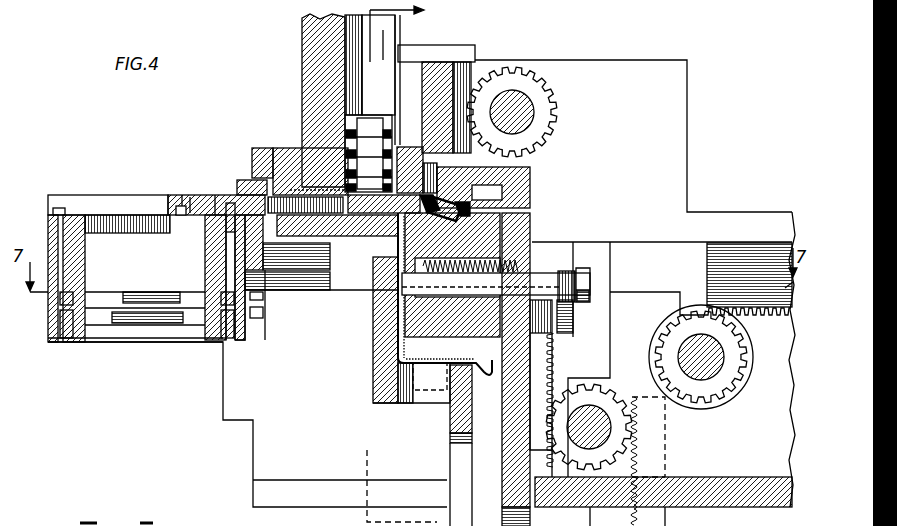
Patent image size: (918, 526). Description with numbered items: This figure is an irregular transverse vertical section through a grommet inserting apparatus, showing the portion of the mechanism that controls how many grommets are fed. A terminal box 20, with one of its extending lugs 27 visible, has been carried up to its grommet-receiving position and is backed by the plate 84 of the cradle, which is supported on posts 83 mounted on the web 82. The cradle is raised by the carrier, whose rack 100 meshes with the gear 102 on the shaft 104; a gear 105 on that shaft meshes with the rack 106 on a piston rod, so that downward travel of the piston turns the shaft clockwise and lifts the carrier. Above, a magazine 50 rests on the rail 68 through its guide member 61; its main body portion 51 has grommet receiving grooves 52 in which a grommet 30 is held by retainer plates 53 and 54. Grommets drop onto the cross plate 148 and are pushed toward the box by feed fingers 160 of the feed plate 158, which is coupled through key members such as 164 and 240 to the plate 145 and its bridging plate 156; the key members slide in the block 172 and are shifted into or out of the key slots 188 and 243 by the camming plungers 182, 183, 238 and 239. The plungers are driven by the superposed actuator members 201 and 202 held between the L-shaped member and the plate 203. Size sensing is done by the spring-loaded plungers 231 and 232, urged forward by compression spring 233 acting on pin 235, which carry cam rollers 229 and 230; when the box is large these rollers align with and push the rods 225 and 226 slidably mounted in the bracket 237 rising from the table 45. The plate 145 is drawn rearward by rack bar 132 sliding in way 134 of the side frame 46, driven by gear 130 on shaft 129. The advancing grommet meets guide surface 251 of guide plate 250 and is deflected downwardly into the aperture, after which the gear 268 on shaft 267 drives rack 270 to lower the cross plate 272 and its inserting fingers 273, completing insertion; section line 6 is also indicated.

The section line 6 is at (406, 33).
The terminal box 20 is at (368, 294).
The extending lug 27 is at (437, 390).
The grommet 30 is at (370, 115).
The table 45 is at (735, 498).
The side frame 46 is at (687, 141).
The magazine 50 is at (288, 26).
The main body portion 51 is at (302, 44).
The grommet receiving groove 52 is at (383, 30).
The retainer plate 53 is at (302, 58).
The retainer plate 54 is at (400, 40).
The guide member 61 is at (285, 148).
The rail 68 is at (257, 148).
The web 82 is at (452, 420).
The post 83 is at (405, 403).
The plate 84 is at (373, 383).
The rack 100 is at (595, 411).
The gear 102 is at (617, 393).
The shaft 104 is at (625, 413).
The gear 105 is at (633, 433).
The rack 106 is at (647, 445).
The shaft 129 is at (720, 367).
The gear 130 is at (714, 367).
The rack bar 132 is at (731, 260).
The way 134 is at (297, 291).
The plate 145 is at (206, 233).
The cross plate 148 is at (330, 252).
The bridging plate 156 is at (247, 181).
The feed plate 158 is at (183, 197).
The feed finger 160 is at (343, 236).
The key member 164 is at (193, 197).
The block 172 is at (207, 252).
The camming plunger 182 is at (220, 298).
The camming plunger 183 is at (222, 328).
The key slot 188 is at (230, 200).
The actuator member 201 is at (143, 298).
The actuator member 202 is at (152, 320).
The plate 203 is at (167, 342).
The push rod 225 is at (590, 274).
The push rod 226 is at (570, 313).
The cam roller 229 is at (593, 292).
The cam roller 230 is at (542, 340).
The plunger 231 is at (541, 276).
The plunger 232 is at (545, 362).
The compression spring 233 is at (496, 362).
The pin 235 is at (422, 270).
The bracket 237 is at (600, 242).
The camming plunger 238 is at (72, 295).
The camming plunger 239 is at (70, 323).
The key member 240 is at (55, 225).
The key slot 243 is at (187, 207).
The guide plate 250 is at (510, 177).
The guide surface 251 is at (500, 185).
The shaft 267 is at (530, 109).
The gear 268 is at (545, 87).
The rack 270 is at (544, 95).
The cross plate 272 is at (448, 60).
The inserting finger 273 is at (437, 168).